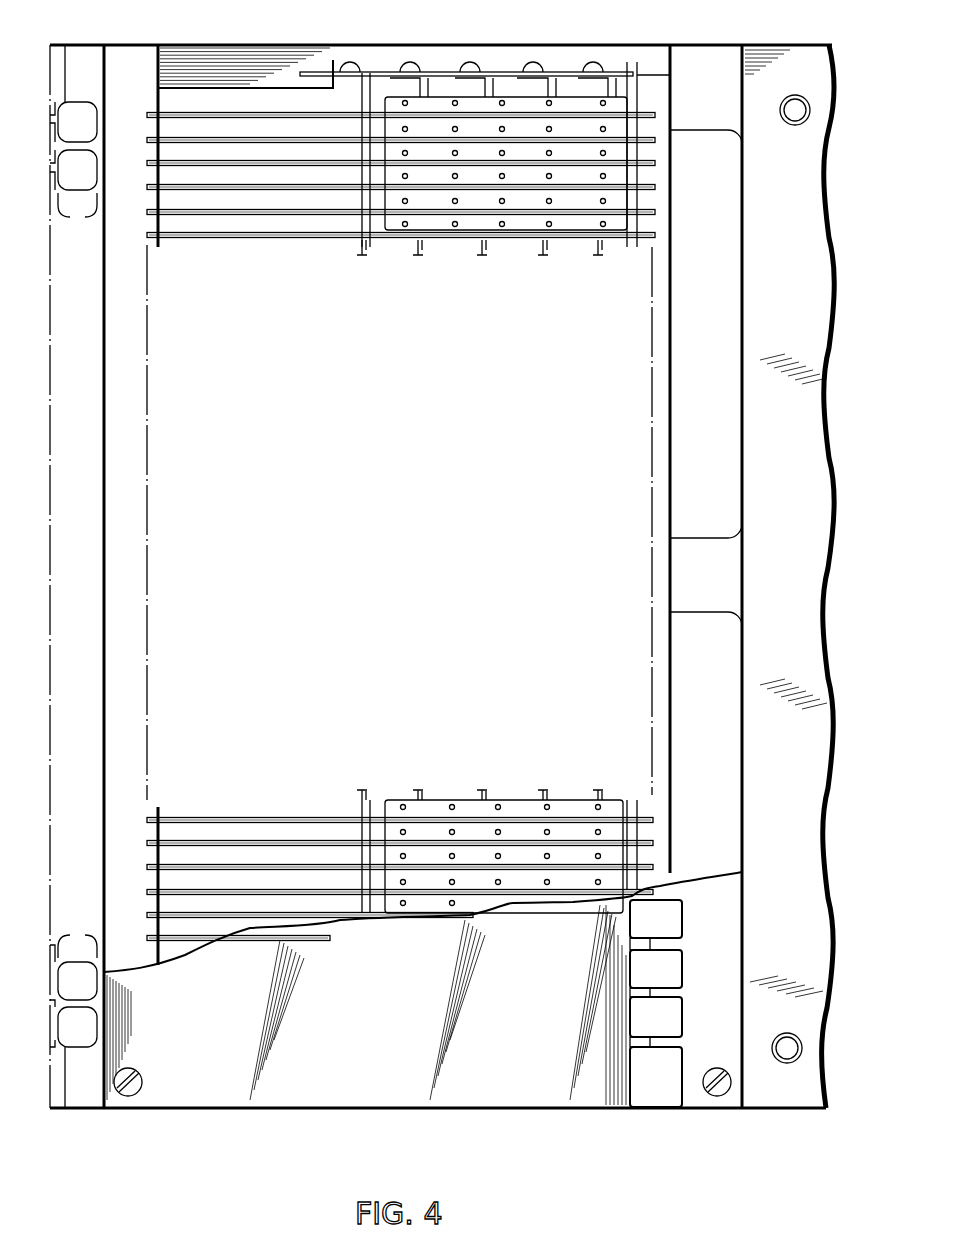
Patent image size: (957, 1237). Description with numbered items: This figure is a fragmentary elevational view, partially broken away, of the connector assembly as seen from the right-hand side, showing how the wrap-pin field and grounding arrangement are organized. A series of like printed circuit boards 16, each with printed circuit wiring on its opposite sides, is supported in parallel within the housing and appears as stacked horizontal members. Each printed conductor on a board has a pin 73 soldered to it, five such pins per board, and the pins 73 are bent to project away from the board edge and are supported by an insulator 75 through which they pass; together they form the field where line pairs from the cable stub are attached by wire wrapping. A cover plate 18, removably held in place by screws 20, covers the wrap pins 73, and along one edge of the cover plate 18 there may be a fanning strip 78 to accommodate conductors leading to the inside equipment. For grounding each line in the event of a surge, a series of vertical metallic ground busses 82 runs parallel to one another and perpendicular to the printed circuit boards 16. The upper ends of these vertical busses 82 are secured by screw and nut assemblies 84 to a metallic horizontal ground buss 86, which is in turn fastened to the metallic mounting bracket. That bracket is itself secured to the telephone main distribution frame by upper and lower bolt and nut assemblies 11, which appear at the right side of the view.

The bolt and nut assemblies 11 is at (795, 110).
The printed circuit boards 16 is at (266, 213).
The cover plate 18 is at (210, 1080).
The screws 20 is at (130, 1092).
The pins 73 is at (503, 222).
The insulator 75 is at (563, 224).
The fanning strip 78 is at (680, 1010).
The vertical metallic ground busses 82 is at (365, 243).
The screw and nut assemblies 84 is at (405, 68).
The horizontal ground buss 86 is at (507, 72).